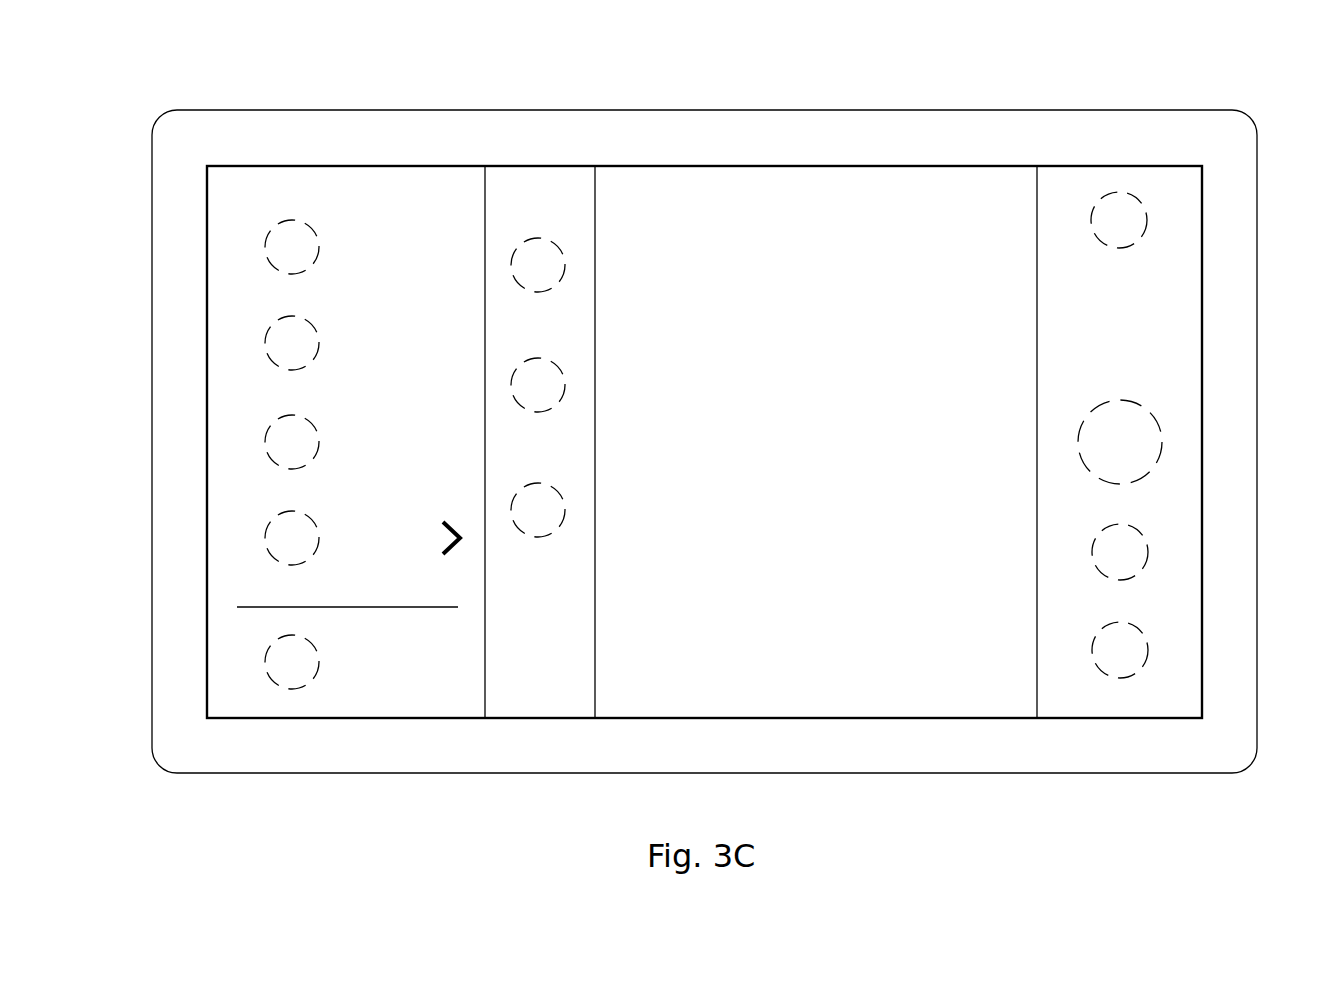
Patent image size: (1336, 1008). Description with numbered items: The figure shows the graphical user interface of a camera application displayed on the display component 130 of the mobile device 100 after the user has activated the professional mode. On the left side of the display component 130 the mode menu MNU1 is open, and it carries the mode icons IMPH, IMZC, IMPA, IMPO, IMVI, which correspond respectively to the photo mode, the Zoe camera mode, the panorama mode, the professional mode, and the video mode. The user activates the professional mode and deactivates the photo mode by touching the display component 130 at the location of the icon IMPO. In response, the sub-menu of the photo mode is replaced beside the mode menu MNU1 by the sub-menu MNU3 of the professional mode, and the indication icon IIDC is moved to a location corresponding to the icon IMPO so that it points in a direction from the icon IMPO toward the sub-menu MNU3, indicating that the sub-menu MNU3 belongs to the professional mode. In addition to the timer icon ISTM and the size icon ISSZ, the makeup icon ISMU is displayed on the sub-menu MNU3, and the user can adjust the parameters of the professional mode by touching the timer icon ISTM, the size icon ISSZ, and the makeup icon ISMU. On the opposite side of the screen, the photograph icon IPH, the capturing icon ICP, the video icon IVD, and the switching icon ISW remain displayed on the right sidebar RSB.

The mobile device 100 is at (427, 110).
The display component 130 is at (375, 166).
The mode menu MNU1 is at (232, 178).
The sub-menu of the professional mode MNU3 is at (571, 180).
The indication icon IIDC is at (448, 524).
The mode icon corresponding to the photo mode IMPH is at (265, 243).
The mode icon corresponding to the Zoe camera mode IMZC is at (265, 338).
The mode icon corresponding to the panorama mode IMPA is at (265, 436).
The mode icon corresponding to the professional mode IMPO is at (265, 532).
The mode icon corresponding to the video mode IMVI is at (265, 657).
The timer icon ISTM is at (565, 267).
The size icon ISSZ is at (565, 387).
The makeup icon ISMU is at (565, 512).
The photograph icon IPH is at (1147, 222).
The capturing icon ICP is at (1162, 443).
The video icon IVD is at (1148, 553).
The switching icon ISW is at (1148, 652).
The right sidebar RSB is at (1148, 693).